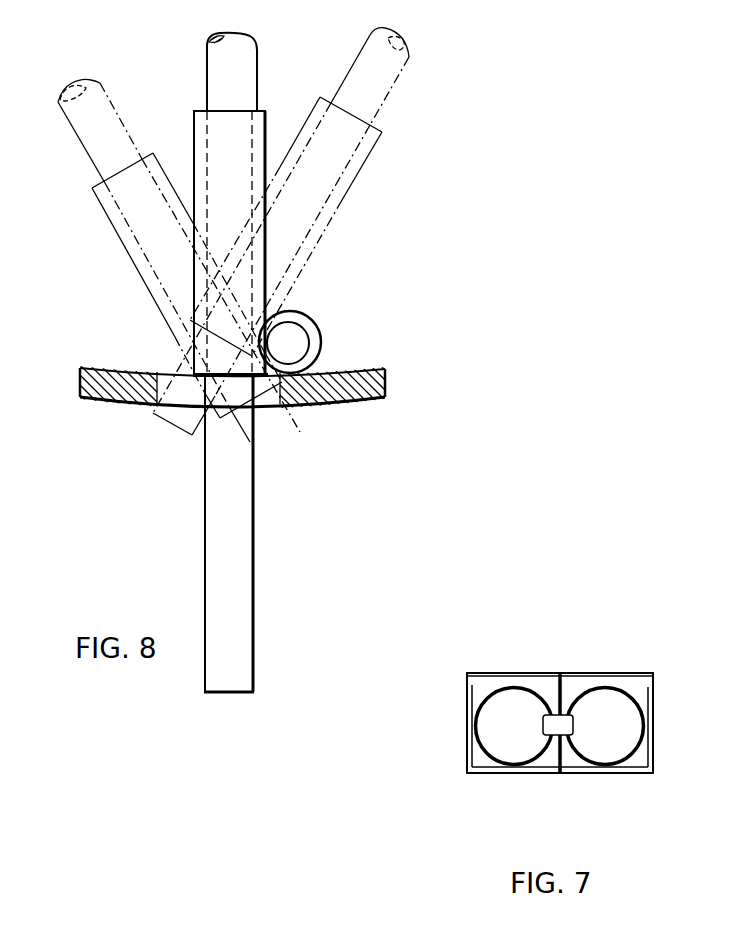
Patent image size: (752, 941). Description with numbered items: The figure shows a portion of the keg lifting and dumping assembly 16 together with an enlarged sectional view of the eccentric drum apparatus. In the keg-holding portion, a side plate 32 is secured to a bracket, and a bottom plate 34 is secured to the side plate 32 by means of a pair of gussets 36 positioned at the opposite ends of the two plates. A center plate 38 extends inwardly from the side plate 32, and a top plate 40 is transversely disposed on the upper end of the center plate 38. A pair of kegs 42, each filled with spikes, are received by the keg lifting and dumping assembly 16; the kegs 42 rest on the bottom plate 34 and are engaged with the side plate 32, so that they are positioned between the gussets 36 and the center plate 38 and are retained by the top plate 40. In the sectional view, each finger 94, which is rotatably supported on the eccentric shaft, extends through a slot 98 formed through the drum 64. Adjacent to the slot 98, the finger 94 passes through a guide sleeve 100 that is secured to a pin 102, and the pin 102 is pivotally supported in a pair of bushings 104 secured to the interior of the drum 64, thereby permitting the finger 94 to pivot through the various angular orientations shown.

In FIG. 8, the finger 94 is at (207, 53).
In FIG. 8, the guide sleeve 100 is at (194, 125).
In FIG. 8, the pin 102 is at (280, 345).
In FIG. 8, the bushing 104 is at (322, 331).
In FIG. 8, the drum 64 is at (340, 405).
In FIG. 8, the slot 98 is at (277, 378).
In FIG. 7, the keg lifting and dumping assembly 16 is at (440, 653).
In FIG. 7, the keg 42 is at (500, 688).
In FIG. 7, the bottom plate 34 is at (528, 673).
In FIG. 7, the center plate 38 is at (565, 678).
In FIG. 7, the gusset 36 is at (467, 730).
In FIG. 7, the top plate 40 is at (540, 727).
In FIG. 7, the side plate 32 is at (620, 775).